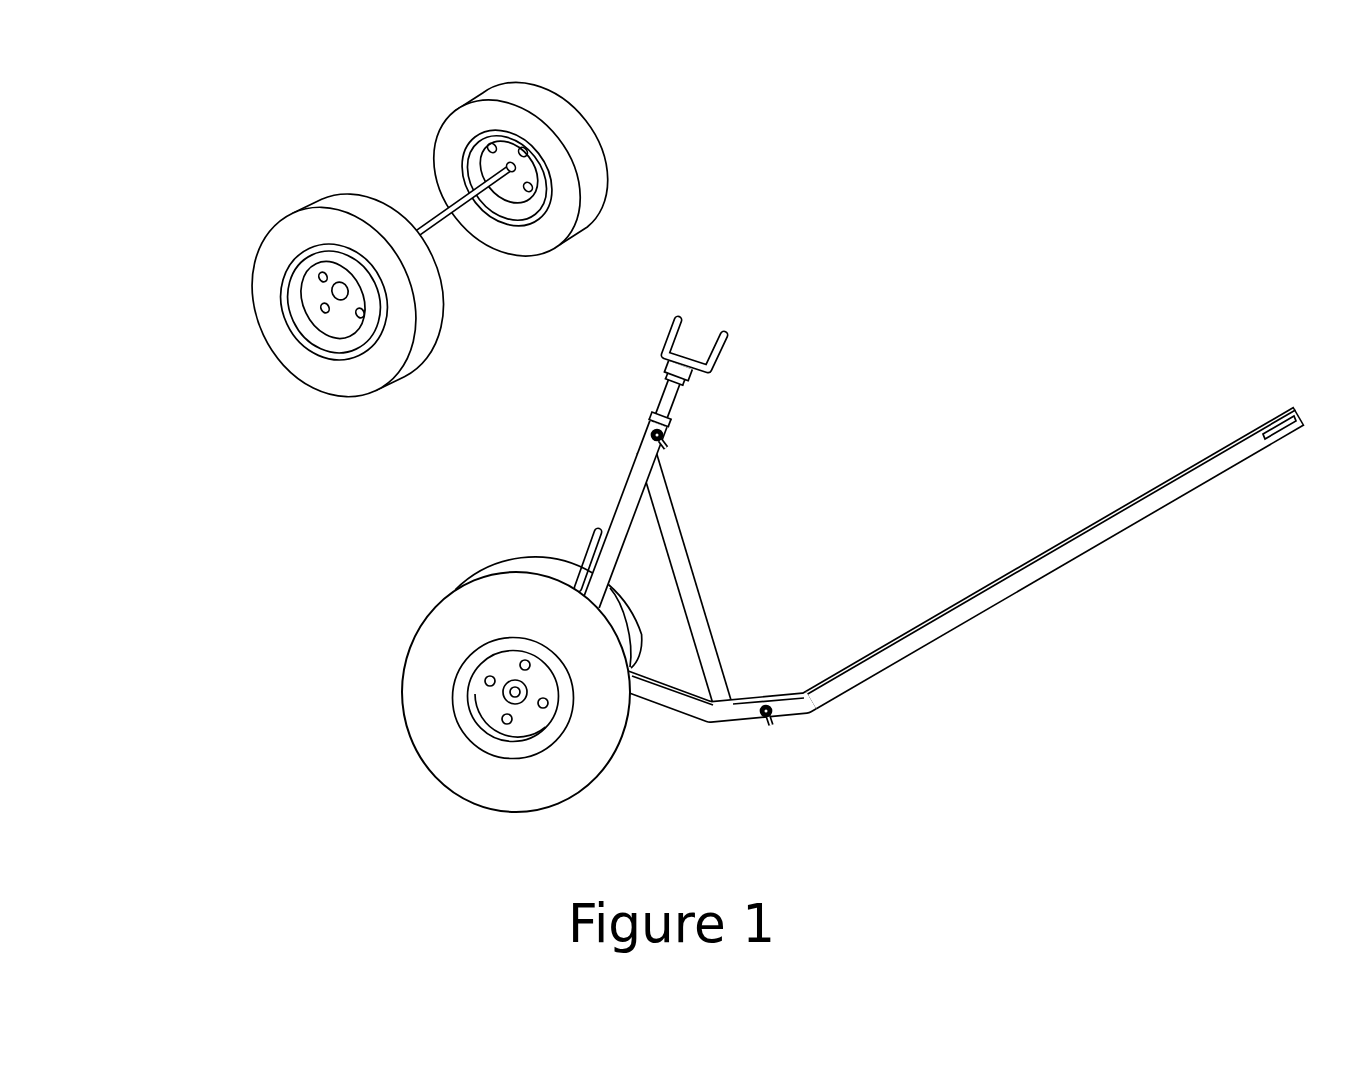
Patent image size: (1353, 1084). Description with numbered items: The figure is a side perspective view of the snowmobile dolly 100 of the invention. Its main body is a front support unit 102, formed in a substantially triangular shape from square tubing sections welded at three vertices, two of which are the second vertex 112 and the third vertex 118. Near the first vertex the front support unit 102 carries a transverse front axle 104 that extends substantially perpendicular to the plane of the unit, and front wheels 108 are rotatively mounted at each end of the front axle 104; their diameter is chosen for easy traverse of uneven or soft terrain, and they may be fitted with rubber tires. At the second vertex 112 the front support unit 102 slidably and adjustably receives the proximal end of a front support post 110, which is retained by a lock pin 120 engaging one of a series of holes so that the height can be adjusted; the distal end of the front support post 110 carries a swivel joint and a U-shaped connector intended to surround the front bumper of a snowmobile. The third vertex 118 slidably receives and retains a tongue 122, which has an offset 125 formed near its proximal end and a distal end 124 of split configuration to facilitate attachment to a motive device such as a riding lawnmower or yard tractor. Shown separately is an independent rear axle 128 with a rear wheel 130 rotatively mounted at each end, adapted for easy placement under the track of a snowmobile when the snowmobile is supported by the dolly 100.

The snowmobile dolly 100 is at (966, 231).
The front support unit 102 is at (622, 507).
The transverse front axle 104 is at (512, 692).
The front wheels 108 is at (448, 772).
The front support post 110 is at (670, 390).
The second vertex 112 is at (645, 514).
The third vertex 118 is at (722, 716).
The lock pin 120 is at (655, 434).
The tongue 122 is at (1064, 573).
The distal end of tongue 124 is at (1295, 431).
The offset 125 is at (771, 706).
The independent rear axle 128 is at (438, 226).
The rear wheels 130 is at (344, 247).